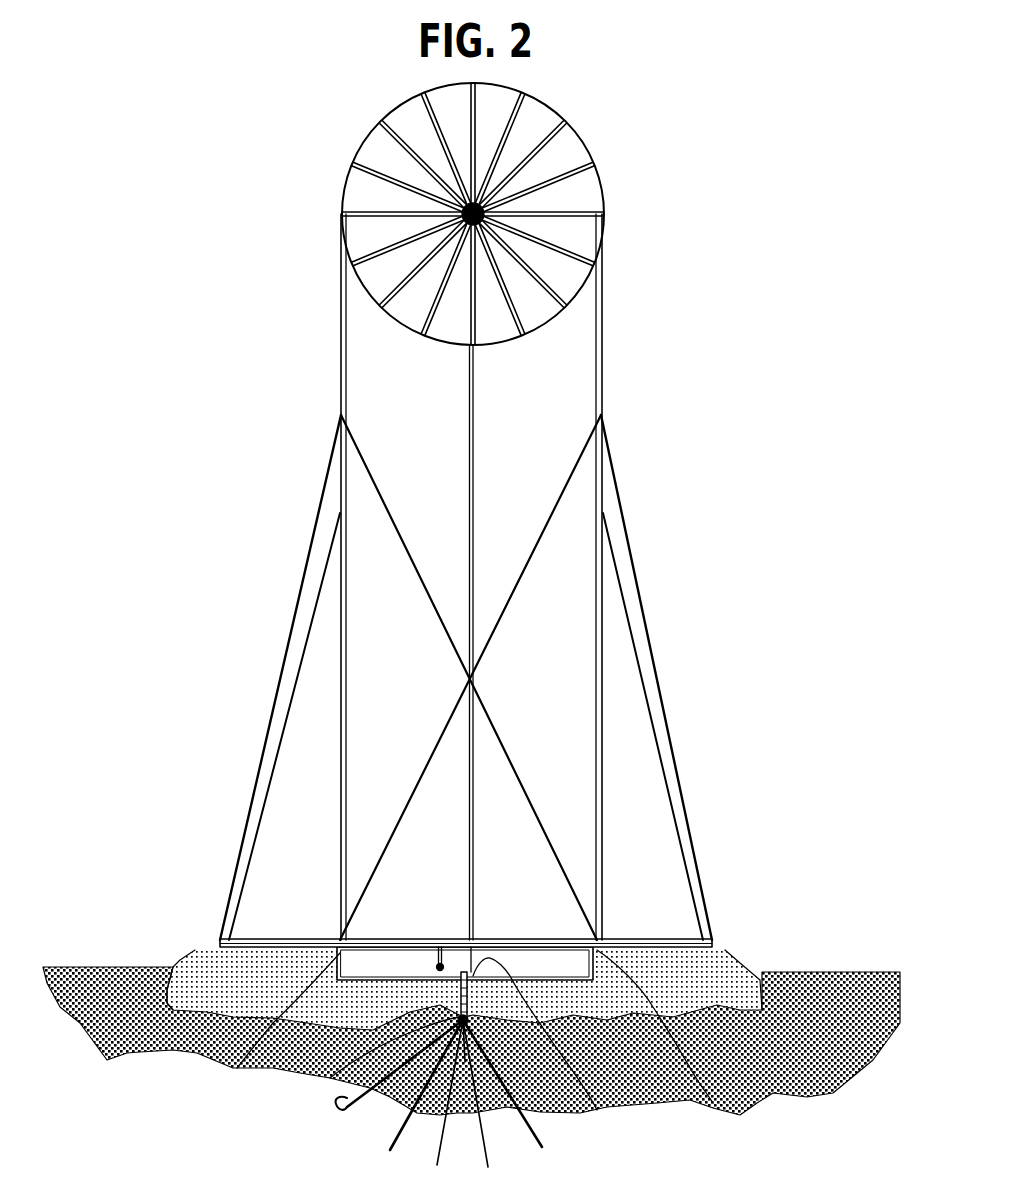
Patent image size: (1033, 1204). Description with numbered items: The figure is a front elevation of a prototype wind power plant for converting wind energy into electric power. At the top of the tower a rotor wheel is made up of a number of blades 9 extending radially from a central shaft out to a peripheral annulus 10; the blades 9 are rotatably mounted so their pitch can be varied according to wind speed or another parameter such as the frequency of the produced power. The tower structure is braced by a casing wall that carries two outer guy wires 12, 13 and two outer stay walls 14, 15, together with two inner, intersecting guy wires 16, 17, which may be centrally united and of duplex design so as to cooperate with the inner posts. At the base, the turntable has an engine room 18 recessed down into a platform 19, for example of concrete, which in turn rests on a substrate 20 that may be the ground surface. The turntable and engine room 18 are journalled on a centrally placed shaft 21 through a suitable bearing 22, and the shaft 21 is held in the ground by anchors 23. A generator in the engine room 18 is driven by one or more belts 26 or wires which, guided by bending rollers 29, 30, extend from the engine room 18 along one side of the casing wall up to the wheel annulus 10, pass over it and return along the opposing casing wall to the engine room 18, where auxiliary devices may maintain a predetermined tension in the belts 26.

The blades 9 is at (572, 145).
The peripheral annulus 10 is at (573, 317).
The outer guy wire 12 is at (300, 588).
The outer guy wire 13 is at (643, 597).
The outer stay wall 14 is at (275, 710).
The outer stay wall 15 is at (650, 695).
The inner intersecting guy wire 16 is at (398, 517).
The inner intersecting guy wire 17 is at (548, 512).
The engine room 18 is at (585, 935).
The platform 19 is at (742, 957).
The substrate 20 is at (92, 967).
The centrally placed shaft 21 is at (330, 1078).
The bearing 22 is at (597, 1110).
The anchors 23 is at (437, 1160).
The belt 26 is at (577, 832).
The bending roller 29 is at (235, 1070).
The bending roller 30 is at (713, 1105).